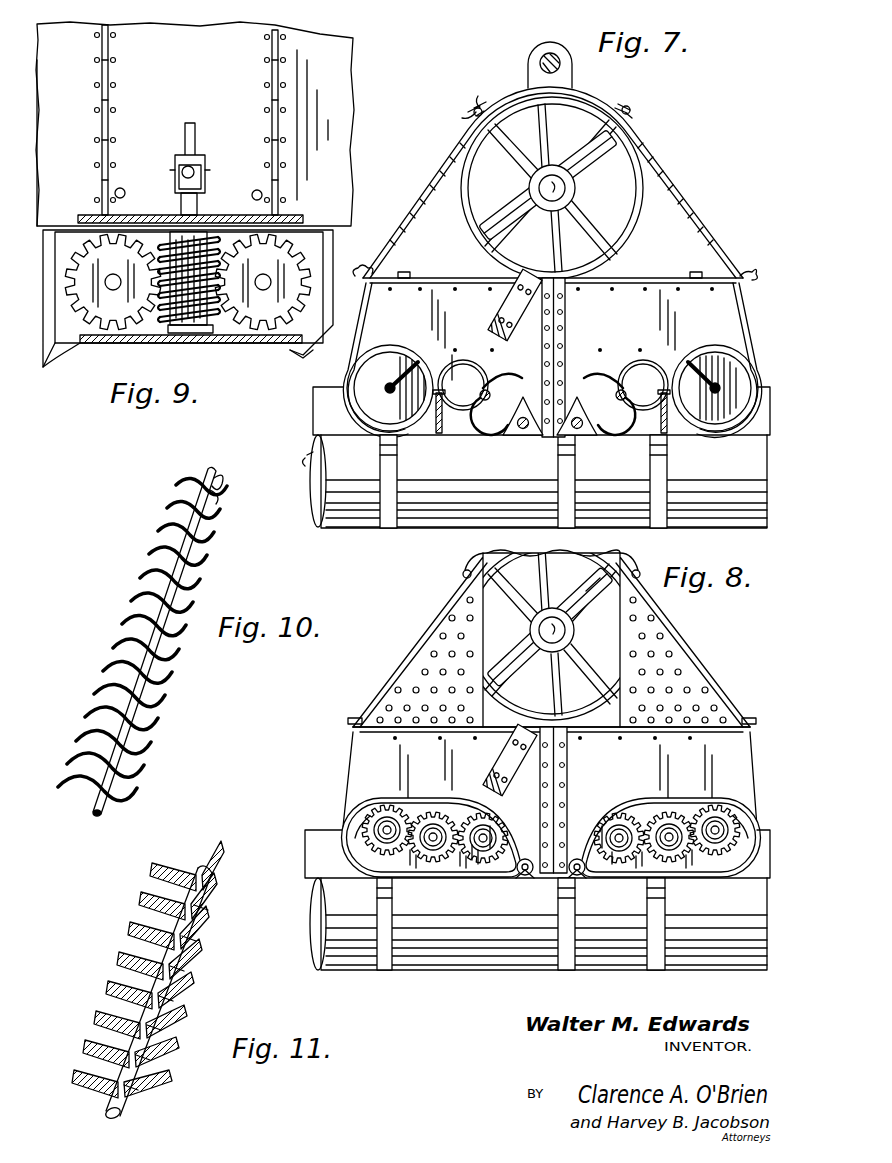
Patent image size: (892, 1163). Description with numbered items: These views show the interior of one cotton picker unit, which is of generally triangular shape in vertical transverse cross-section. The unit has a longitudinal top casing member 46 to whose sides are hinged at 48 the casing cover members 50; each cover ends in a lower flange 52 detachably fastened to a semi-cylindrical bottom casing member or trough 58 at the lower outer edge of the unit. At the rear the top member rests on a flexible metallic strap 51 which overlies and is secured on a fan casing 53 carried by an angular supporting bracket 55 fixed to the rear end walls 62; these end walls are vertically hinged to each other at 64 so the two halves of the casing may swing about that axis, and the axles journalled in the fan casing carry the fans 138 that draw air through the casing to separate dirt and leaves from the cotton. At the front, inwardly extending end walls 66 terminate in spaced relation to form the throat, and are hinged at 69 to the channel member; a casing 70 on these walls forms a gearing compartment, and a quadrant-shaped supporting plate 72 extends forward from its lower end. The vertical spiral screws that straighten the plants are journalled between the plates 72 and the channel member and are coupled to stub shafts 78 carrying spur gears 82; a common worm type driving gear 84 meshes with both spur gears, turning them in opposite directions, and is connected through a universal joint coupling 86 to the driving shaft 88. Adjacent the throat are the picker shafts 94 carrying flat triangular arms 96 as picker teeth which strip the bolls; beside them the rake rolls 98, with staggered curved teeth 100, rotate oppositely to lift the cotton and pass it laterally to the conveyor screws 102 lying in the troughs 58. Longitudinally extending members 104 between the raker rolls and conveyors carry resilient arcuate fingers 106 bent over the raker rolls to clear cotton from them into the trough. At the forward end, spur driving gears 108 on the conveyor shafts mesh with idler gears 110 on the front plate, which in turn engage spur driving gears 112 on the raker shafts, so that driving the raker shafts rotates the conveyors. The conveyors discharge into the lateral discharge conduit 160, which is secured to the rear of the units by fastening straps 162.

In FIG. 7, the top casing member 46 is at (522, 90).
In FIG. 9, the top casing member 46 is at (232, 50).
In FIG. 7, the hinge 48 is at (470, 114).
In FIG. 9, the hinge 48 is at (112, 82).
In FIG. 7, the casing cover member 50 is at (408, 228).
In FIG. 9, the casing cover member 50 is at (52, 180).
In FIG. 7, the flexible metallic strap 51 is at (659, 196).
In FIG. 9, the flange 52 is at (292, 351).
In FIG. 7, the fan casing 53 is at (600, 266).
In FIG. 8, the fan casing 53 is at (588, 716).
In FIG. 7, the angular supporting bracket 55 is at (494, 304).
In FIG. 8, the angular supporting bracket 55 is at (517, 774).
In FIG. 7, the bottom casing member 58 is at (366, 422).
In FIG. 7, the rear end wall 62 is at (366, 292).
In FIG. 8, the rear end wall 62 is at (551, 762).
In FIG. 7, the hinge 64 is at (562, 335).
In FIG. 8, the hinge 64 is at (562, 780).
In FIG. 8, the end wall 66 is at (400, 710).
In FIG. 8, the hinge 69 is at (460, 576).
In FIG. 8, the casing 70 is at (352, 838).
In FIG. 9, the supporting plate 72 is at (62, 350).
In FIG. 9, the stub shaft 78 is at (106, 284).
In FIG. 9, the spur gear 82 is at (103, 343).
In FIG. 9, the worm type driving gear 84 is at (200, 335).
In FIG. 9, the universal joint coupling 86 is at (206, 172).
In FIG. 9, the driving shaft 88 is at (197, 134).
In FIG. 7, the picker shaft 94 is at (523, 440).
In FIG. 8, the picker shaft 94 is at (525, 876).
In FIG. 11, the picker shaft 94 is at (150, 1047).
In FIG. 11, the arm 96 is at (195, 1000).
In FIG. 7, the rake roll 98 is at (492, 414).
In FIG. 8, the rake roll 98 is at (482, 856).
In FIG. 10, the rake roll 98 is at (165, 648).
In FIG. 10, the curved teeth 100 is at (127, 796).
In FIG. 7, the conveyor screw 102 is at (392, 366).
In FIG. 8, the conveyor screw 102 is at (380, 842).
In FIG. 7, the longitudinally extending member 104 is at (436, 416).
In FIG. 7, the resilient arcuate finger 106 is at (462, 369).
In FIG. 8, the spur driving gear 108 is at (345, 822).
In FIG. 8, the idler gear 110 is at (436, 860).
In FIG. 8, the spur driving gear 112 is at (502, 866).
In FIG. 7, the fan 138 is at (605, 148).
In FIG. 8, the fan 138 is at (592, 596).
In FIG. 8, the discharge conduit 160 is at (456, 942).
In FIG. 8, the fastening strap 162 is at (385, 970).